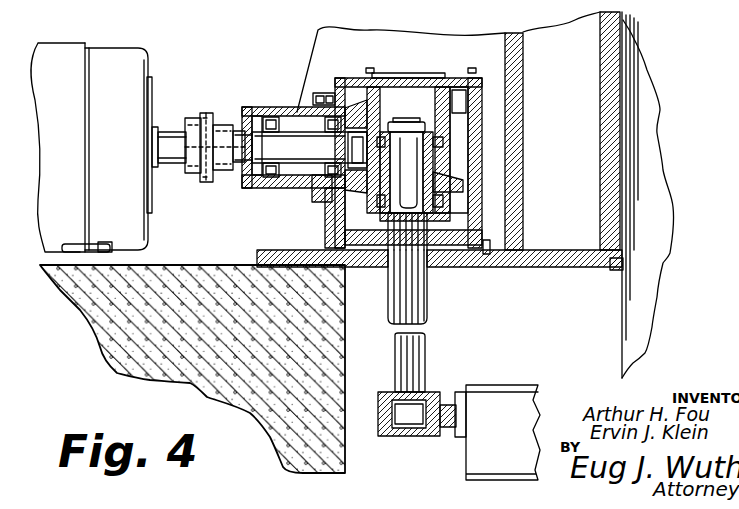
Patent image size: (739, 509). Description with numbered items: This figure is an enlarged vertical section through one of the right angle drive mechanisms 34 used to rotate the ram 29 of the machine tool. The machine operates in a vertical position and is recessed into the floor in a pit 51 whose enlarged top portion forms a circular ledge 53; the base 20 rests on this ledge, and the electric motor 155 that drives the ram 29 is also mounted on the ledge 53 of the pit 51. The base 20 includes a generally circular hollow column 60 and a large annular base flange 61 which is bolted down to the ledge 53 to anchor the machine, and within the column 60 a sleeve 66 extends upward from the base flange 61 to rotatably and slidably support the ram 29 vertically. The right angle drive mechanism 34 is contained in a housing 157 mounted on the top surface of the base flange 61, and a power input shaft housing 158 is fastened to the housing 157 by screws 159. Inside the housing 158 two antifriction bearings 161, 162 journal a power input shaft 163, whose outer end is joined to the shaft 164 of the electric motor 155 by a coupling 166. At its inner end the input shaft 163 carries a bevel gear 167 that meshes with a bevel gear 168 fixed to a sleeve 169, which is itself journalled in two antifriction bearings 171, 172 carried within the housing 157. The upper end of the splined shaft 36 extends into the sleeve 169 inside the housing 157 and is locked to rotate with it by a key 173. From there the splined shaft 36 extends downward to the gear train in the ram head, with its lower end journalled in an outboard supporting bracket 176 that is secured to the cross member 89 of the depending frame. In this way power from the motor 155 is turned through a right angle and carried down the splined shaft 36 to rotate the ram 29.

The base 20 is at (291, 50).
The ram 29 is at (655, 138).
The right angle drive mechanism 34 is at (444, 70).
The splined shaft 36 is at (410, 289).
The pit 51 is at (363, 469).
The circular ledge 53 is at (208, 265).
The hollow column 60 is at (522, 104).
The annular base flange 61 is at (256, 258).
The sleeve 66 is at (606, 78).
The cross member 89 is at (500, 412).
The electric motor 155 is at (125, 62).
The housing 157 is at (338, 96).
The power input shaft housing 158 is at (289, 182).
The screws 159 is at (318, 97).
The antifriction bearing 161 is at (256, 178).
The antifriction bearing 162 is at (315, 185).
The power input shaft 163 is at (290, 148).
The motor shaft 164 is at (163, 138).
The coupling 166 is at (203, 118).
The bevel gear 167 is at (362, 108).
The bevel gear 168 is at (455, 183).
The sleeve 169 is at (436, 158).
The antifriction bearing 171 is at (432, 124).
The antifriction bearing 172 is at (440, 199).
The key 173 is at (412, 205).
The outboard supporting bracket 176 is at (405, 437).